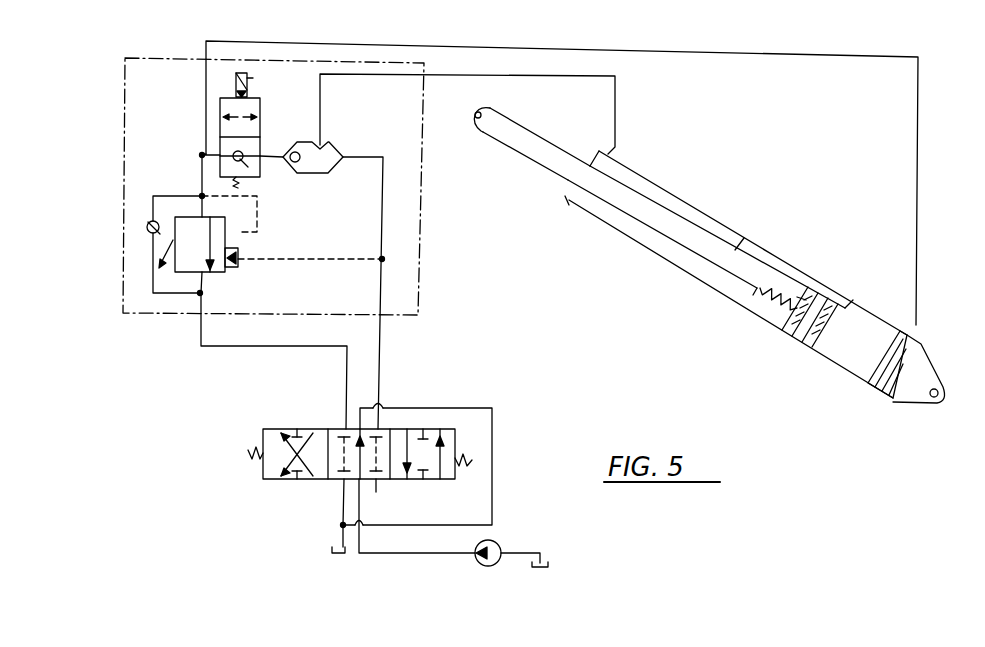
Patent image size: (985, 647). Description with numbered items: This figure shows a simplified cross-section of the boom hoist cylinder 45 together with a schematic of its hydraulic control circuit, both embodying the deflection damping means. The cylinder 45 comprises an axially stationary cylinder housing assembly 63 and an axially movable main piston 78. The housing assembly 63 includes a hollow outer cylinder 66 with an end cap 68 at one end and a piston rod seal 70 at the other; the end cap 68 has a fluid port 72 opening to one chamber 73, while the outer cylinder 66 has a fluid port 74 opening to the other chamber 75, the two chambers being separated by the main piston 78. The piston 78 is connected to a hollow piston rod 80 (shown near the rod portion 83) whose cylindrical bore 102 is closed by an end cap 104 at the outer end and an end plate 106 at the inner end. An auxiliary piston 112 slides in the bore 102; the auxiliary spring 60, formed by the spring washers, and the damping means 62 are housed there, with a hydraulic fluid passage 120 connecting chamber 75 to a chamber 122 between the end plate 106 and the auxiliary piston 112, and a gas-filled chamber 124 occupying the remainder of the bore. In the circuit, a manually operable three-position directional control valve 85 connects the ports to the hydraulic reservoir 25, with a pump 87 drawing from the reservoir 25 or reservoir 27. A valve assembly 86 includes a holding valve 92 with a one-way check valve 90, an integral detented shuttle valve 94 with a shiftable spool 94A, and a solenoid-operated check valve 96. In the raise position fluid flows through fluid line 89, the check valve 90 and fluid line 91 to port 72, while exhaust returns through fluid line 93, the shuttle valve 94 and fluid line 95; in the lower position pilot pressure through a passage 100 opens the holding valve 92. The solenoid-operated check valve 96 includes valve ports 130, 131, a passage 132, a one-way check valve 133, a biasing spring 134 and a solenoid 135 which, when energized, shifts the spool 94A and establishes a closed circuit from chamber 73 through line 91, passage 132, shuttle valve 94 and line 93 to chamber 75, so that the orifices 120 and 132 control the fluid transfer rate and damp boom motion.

The hydraulic reservoir 25 is at (330, 550).
The reservoir 27 is at (551, 563).
The boom hoist cylinder 45 is at (725, 213).
The auxiliary spring 60 is at (767, 298).
The damping means 62 is at (777, 328).
The cylinder housing assembly 63 is at (670, 188).
The outer cylinder 66 is at (640, 175).
The end cap 68 is at (887, 390).
The piston rod seal 70 is at (568, 192).
The fluid port 72 is at (910, 342).
The chamber 73 is at (845, 363).
The fluid port 74 is at (615, 153).
The chamber 75 is at (602, 213).
The main piston 78 is at (837, 312).
The piston rod 80 is at (730, 250).
The piston rod 83 is at (567, 185).
The boom hoist directional control valve 85 is at (257, 464).
The valve assembly 86 is at (418, 255).
The pump 87 is at (498, 545).
The fluid line 89 is at (290, 327).
The one-way check valve 90 is at (146, 222).
The fluid line 91 is at (493, 48).
The holding valve 92 is at (210, 265).
The fluid line 93 is at (432, 78).
The shuttle valve 94 is at (337, 147).
The shiftable spool 94A is at (298, 163).
The fluid line 95 is at (382, 364).
The solenoid-operated check valve 96 is at (262, 118).
The passage 100 is at (323, 257).
The cylindrical bore 102 is at (802, 318).
The end cap 104 is at (485, 112).
The end plate 106 is at (822, 327).
The auxiliary piston 112 is at (797, 297).
The hydraulic fluid passage 120 is at (820, 300).
The chamber 122 is at (810, 303).
The chamber 124 is at (665, 232).
The valve port 130 is at (202, 153).
The valve port 131 is at (283, 152).
The passage 132 is at (245, 115).
The one-way check valve 133 is at (243, 163).
The biasing spring 134 is at (233, 182).
The solenoid 135 is at (253, 77).